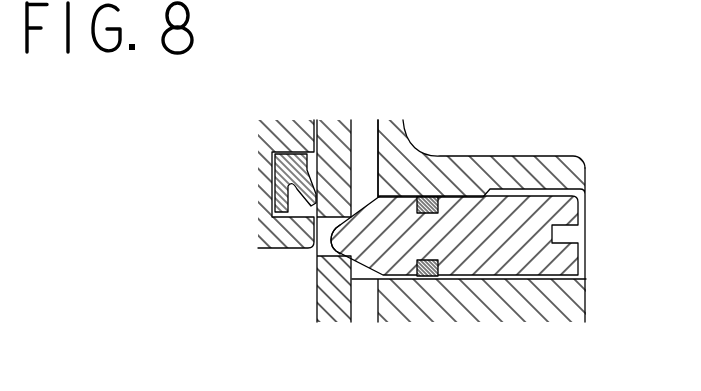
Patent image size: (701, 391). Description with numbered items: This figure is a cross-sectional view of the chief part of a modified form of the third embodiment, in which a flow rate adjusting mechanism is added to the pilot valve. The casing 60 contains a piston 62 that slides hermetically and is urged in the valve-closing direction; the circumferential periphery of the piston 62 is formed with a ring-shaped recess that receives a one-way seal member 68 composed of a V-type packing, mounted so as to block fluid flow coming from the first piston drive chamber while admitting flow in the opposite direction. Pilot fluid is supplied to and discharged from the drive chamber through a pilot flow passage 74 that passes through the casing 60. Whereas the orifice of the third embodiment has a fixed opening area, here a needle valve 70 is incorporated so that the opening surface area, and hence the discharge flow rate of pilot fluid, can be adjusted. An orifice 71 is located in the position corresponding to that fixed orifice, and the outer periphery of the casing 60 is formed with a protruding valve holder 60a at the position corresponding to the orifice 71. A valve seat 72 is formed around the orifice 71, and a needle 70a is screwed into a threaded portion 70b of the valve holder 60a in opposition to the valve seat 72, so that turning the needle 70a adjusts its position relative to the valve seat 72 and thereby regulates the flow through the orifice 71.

The casing 60 is at (481, 199).
The valve holder 60a is at (524, 153).
The piston 62 is at (288, 238).
The one-way seal member 68 is at (272, 173).
The needle valve 70 is at (457, 216).
The needle 70a is at (429, 285).
The threaded portion 70b is at (558, 282).
The orifice 71 is at (325, 242).
The valve seat 72 is at (355, 258).
The pilot flow passage 74 is at (358, 150).